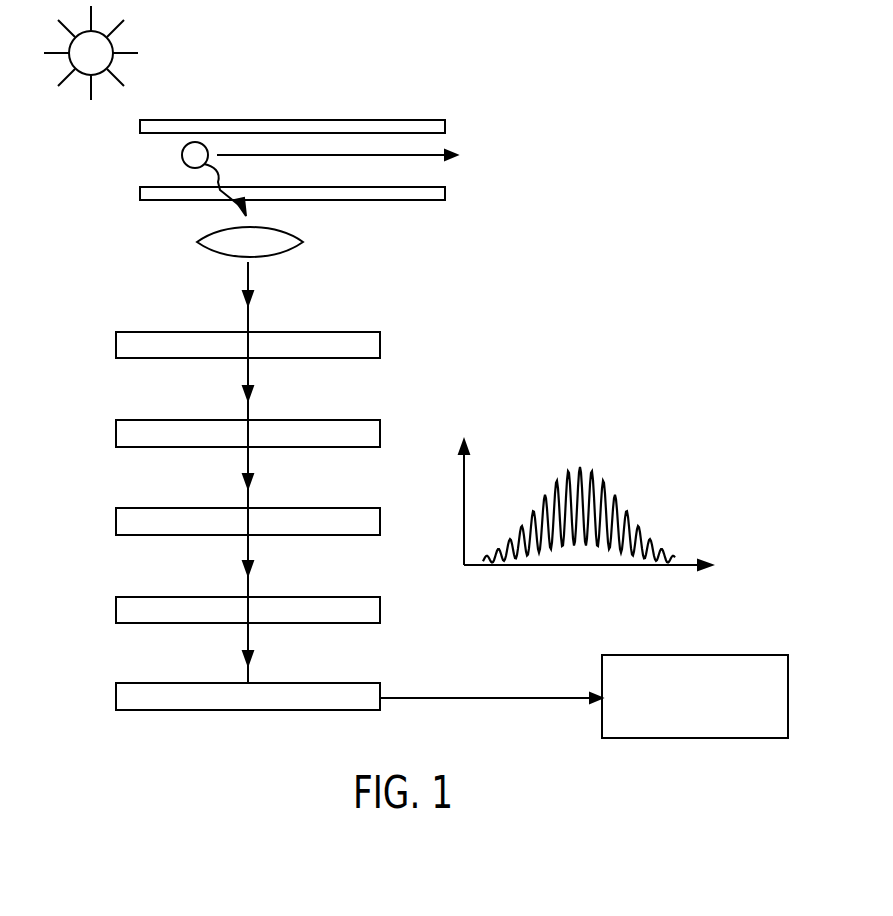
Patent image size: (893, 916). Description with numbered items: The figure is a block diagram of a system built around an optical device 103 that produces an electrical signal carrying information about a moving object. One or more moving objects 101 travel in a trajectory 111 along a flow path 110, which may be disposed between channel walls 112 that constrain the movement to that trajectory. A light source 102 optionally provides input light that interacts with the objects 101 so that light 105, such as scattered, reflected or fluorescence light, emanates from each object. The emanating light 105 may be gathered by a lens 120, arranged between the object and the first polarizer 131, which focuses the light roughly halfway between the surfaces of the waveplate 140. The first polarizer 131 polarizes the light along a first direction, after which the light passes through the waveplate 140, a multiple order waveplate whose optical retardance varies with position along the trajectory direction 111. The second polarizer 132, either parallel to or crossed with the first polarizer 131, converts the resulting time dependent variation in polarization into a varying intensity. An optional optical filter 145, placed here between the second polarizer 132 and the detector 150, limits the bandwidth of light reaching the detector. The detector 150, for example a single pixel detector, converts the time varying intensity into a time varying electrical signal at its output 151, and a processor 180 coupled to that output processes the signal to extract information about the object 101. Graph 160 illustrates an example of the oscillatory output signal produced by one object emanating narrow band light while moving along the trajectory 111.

The light source 102 is at (56, 56).
The flow path 110 is at (325, 84).
The channel walls 112 is at (445, 127).
The trajectory 111 is at (375, 158).
The moving object 101 is at (183, 157).
The emanating light 105 is at (222, 186).
The lens 120 is at (200, 242).
The optical device 103 is at (590, 244).
The first polarizer 131 is at (116, 345).
The waveplate 140 is at (116, 435).
The second polarizer 132 is at (116, 521).
The optical filter 145 is at (116, 607).
The detector 150 is at (116, 697).
The output 151 is at (478, 697).
The processor 180 is at (710, 655).
The graph 160 is at (637, 432).